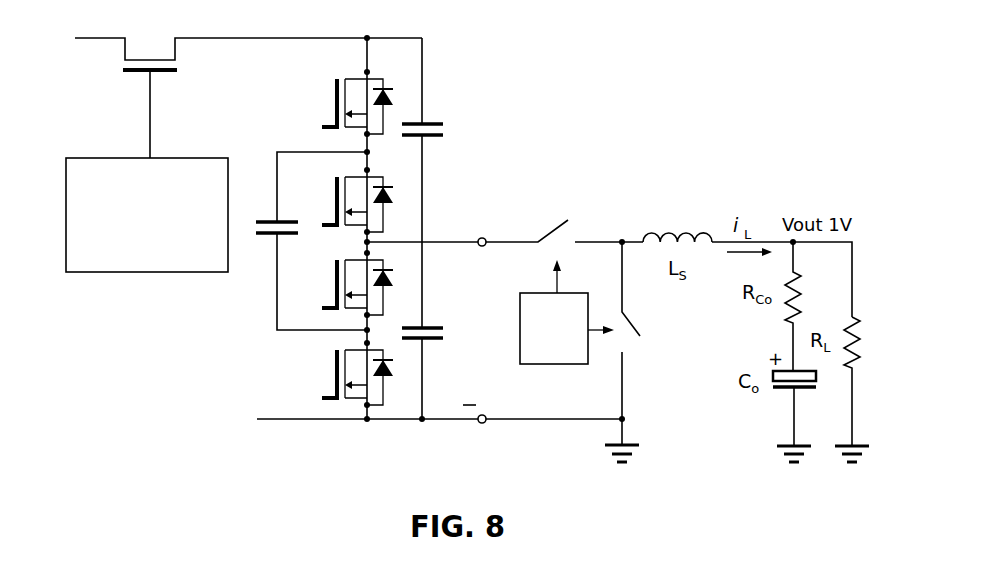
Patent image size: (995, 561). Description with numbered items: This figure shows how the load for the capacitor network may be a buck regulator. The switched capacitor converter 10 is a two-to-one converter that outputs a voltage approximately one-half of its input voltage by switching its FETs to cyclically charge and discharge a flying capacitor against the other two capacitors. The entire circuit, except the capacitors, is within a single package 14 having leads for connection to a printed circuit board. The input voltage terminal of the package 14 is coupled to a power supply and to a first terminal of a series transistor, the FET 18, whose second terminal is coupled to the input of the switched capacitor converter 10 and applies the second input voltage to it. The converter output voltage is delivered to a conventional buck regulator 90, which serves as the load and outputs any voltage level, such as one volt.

The switched capacitor converter 10 is at (496, 76).
The package 14 is at (95, 125).
The FET 18 is at (148, 47).
The buck regulator 90 is at (613, 191).